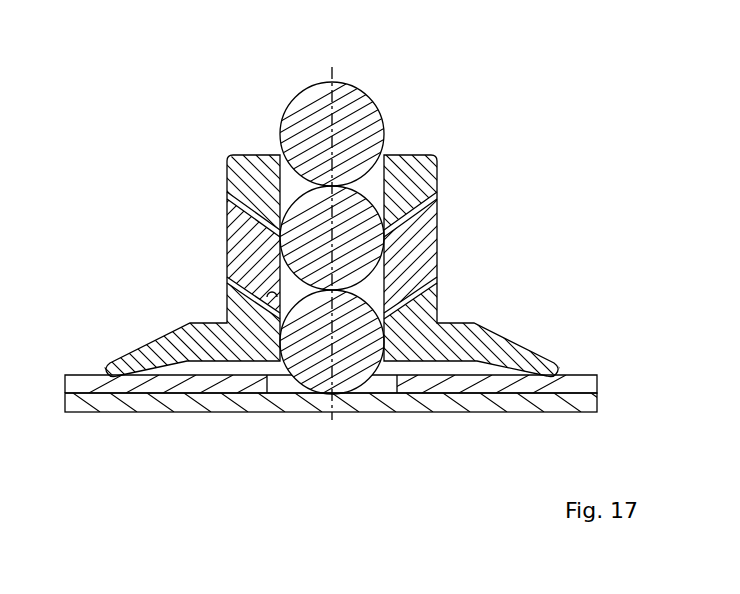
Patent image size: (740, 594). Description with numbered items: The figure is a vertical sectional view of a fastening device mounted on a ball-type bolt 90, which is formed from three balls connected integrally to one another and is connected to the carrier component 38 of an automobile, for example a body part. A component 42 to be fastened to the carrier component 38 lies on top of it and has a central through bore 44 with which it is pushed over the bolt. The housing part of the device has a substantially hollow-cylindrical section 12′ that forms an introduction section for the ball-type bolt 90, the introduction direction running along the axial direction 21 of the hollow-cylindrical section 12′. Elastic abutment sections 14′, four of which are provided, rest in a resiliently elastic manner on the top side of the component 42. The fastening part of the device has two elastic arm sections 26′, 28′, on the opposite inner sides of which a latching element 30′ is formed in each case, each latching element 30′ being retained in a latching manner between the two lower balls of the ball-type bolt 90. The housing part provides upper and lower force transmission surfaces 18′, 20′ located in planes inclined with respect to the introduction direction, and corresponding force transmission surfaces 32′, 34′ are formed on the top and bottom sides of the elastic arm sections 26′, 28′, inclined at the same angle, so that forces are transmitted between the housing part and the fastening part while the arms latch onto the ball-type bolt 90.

The hollow-cylindrical section 12′ is at (413, 165).
The elastic abutment sections 14′ is at (148, 352).
The upper force transmission surface 18′ is at (233, 175).
The lower force transmission surface 20′ is at (256, 276).
The axial direction 21 is at (334, 68).
The elastic arm section 26′ is at (422, 245).
The elastic arm section 28′ is at (238, 237).
The latching element 30′ is at (232, 279).
The force transmission surface 32′ is at (234, 202).
The force transmission surface 34′ is at (284, 312).
The carrier component 38 is at (112, 403).
The component 42 is at (83, 393).
The central through bore 44 is at (395, 387).
The ball-type bolt 90 is at (395, 200).